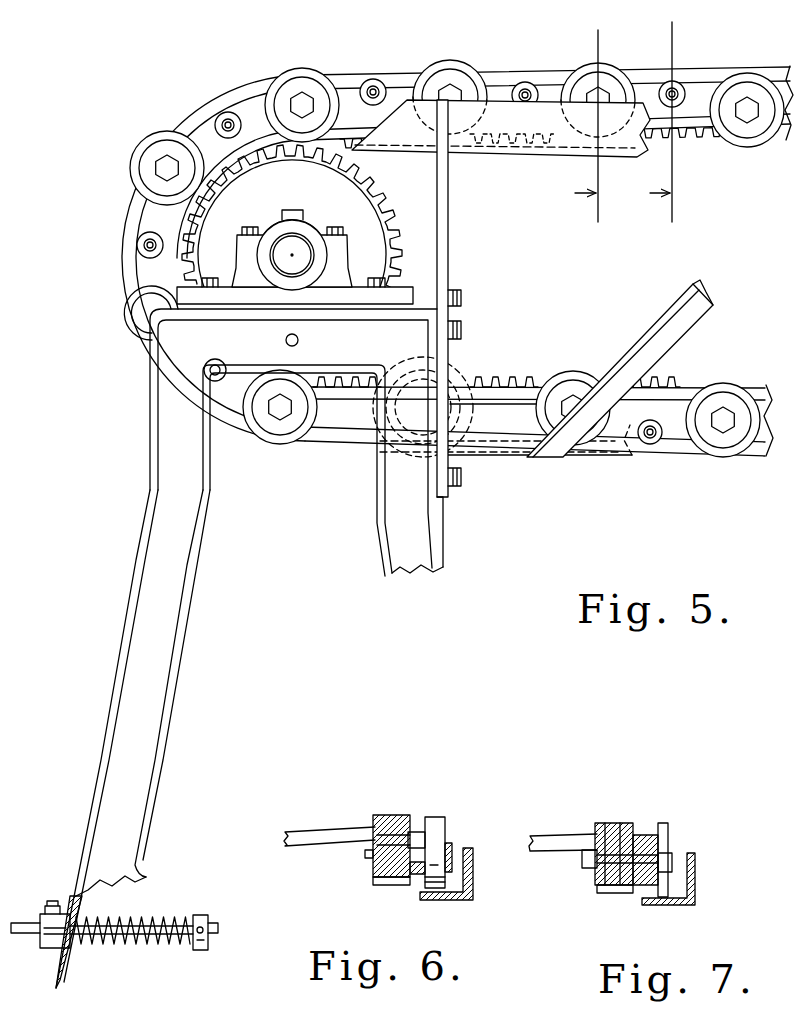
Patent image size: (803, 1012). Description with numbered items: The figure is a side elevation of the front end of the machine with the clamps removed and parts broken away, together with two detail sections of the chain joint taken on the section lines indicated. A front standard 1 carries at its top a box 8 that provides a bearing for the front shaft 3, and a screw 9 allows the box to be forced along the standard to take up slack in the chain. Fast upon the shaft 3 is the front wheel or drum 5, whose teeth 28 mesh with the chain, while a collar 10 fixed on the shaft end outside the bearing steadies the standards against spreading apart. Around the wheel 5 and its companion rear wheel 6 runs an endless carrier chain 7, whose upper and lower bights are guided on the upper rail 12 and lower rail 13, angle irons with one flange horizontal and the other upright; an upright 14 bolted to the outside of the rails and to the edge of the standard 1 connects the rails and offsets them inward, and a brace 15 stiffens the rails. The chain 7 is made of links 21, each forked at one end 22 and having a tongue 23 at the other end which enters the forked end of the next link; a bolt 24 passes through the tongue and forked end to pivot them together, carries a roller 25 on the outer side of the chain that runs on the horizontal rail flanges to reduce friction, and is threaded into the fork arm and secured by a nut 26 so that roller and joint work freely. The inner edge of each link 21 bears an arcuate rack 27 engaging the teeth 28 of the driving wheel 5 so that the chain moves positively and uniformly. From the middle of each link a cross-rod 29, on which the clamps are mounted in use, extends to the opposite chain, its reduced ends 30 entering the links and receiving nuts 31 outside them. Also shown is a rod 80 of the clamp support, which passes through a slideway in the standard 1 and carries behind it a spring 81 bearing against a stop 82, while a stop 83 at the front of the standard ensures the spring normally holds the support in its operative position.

In FIG. 5, the front standards 1 is at (119, 717).
In FIG. 5, the front shaft 3 is at (280, 247).
In FIG. 5, the front wheel or drum 5 is at (210, 223).
In FIG. 5, the rear wheel or drum 6 is at (672, 122).
In FIG. 5, the endless carrier chain 7 is at (716, 500).
In FIG. 5, the box 8 is at (343, 273).
In FIG. 5, the screw 9 is at (463, 298).
In FIG. 5, the collar 10 is at (313, 230).
In FIG. 5, the upper rail 12 is at (502, 110).
In FIG. 6, the upper rail 12 is at (473, 875).
In FIG. 7, the upper rail 12 is at (696, 883).
In FIG. 5, the lower rail 13 is at (607, 458).
In FIG. 5, the upright 14 is at (450, 255).
In FIG. 5, the brace 15 is at (695, 320).
In FIG. 5, the link 21 is at (215, 100).
In FIG. 6, the link 21 is at (383, 815).
In FIG. 7, the link 21 is at (595, 823).
In FIG. 7, the forked end 22 is at (620, 838).
In FIG. 7, the tongue 23 is at (612, 893).
In FIG. 5, the bolt 24 is at (590, 100).
In FIG. 6, the bolt 24 is at (452, 853).
In FIG. 7, the bolt 24 is at (664, 860).
In FIG. 6, the roller 25 is at (437, 825).
In FIG. 7, the roller 25 is at (662, 825).
In FIG. 7, the nut 26 is at (590, 870).
In FIG. 5, the rack 27 is at (498, 380).
In FIG. 5, the teeth 28 is at (388, 212).
In FIG. 6, the cross-rod 29 is at (305, 835).
In FIG. 7, the cross-rod 29 is at (547, 840).
In FIG. 6, the reduced end 30 is at (395, 838).
In FIG. 5, the nut 31 is at (377, 90).
In FIG. 6, the nut 31 is at (418, 836).
In FIG. 5, the rod 80 is at (22, 923).
In FIG. 5, the spring 81 is at (140, 944).
In FIG. 5, the stop 82 is at (207, 916).
In FIG. 5, the stop 83 is at (48, 948).